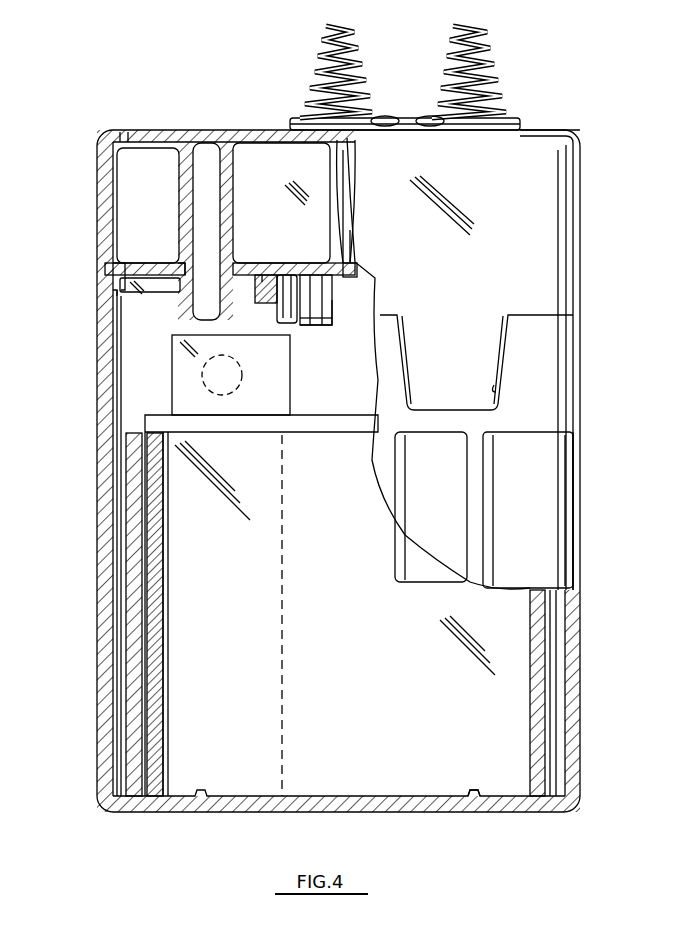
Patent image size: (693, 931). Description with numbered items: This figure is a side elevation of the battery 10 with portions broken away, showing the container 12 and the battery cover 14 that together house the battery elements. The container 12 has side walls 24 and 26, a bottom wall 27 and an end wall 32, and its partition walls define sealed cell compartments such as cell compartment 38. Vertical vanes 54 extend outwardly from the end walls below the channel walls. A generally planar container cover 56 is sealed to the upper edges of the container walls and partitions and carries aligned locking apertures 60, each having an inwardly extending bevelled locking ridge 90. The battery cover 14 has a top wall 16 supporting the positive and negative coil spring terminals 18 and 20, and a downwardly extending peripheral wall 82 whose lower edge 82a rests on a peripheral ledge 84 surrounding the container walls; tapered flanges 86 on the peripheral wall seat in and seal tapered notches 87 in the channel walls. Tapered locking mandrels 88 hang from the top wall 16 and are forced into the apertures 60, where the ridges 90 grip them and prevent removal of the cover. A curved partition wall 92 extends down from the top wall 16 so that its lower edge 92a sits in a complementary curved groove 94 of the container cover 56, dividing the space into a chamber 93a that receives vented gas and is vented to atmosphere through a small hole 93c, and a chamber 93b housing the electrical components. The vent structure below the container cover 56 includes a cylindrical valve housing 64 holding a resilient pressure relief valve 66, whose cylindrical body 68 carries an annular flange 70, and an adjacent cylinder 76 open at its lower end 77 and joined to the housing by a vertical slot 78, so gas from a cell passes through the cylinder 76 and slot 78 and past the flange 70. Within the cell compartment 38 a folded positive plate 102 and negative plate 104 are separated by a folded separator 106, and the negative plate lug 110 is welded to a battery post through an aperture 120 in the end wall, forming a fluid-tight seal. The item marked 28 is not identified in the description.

The battery 10 is at (555, 112).
The container 12 is at (578, 462).
The battery cover 14 is at (578, 262).
The top wall 16 is at (200, 135).
The positive coil spring battery terminal 18 is at (490, 55).
The negative coil spring battery terminal 20 is at (318, 50).
The side wall 24 is at (97, 640).
The side wall 26 is at (580, 655).
The bottom wall 27 is at (473, 812).
The spring contacts 28 is at (420, 115).
The end wall 32 is at (568, 506).
The cell compartment 38 is at (121, 400).
The vertical vanes 54 is at (466, 473).
The container cover 56 is at (120, 265).
The locking aperture 60 is at (180, 262).
The valve housing 64 is at (270, 292).
The pressure relief valve 66 is at (266, 260).
The cylindrical body portion 68 is at (332, 287).
The annular flange 70 is at (272, 262).
The cylinder 76 is at (332, 320).
The lower end 77 is at (318, 322).
The vertical slot 78 is at (292, 324).
The peripheral wall 82 is at (105, 180).
The lower edge 82a is at (115, 305).
The peripheral ledge 84 is at (112, 300).
The tapered flange 86 is at (500, 360).
The tapered notch 87 is at (496, 387).
The locking mandrel 88 is at (180, 183).
The locking ridge 90 is at (185, 294).
The curved partition wall 92 is at (350, 220).
The lower edge 92a is at (358, 268).
The chamber 93a is at (302, 175).
The chamber 93b is at (350, 188).
The small hole 93c is at (128, 132).
The curved groove 94 is at (352, 240).
The positive plate 102 is at (135, 470).
The negative plate 104 is at (148, 507).
The folded separator 106 is at (145, 425).
The lug 110 is at (290, 387).
The aperture 120 is at (205, 370).